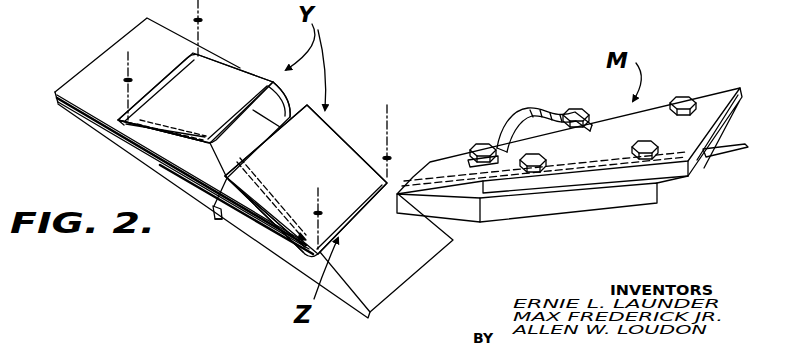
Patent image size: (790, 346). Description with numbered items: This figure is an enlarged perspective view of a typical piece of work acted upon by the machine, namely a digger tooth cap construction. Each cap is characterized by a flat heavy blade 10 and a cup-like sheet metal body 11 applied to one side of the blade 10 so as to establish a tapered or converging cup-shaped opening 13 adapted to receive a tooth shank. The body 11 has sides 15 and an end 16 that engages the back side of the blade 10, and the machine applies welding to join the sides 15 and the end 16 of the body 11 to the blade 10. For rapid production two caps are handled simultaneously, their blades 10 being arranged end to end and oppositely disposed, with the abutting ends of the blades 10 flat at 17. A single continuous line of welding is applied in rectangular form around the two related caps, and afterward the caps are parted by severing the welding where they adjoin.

The blade 10 is at (99, 99).
The body 11 is at (236, 82).
The cup-shaped opening 13 is at (212, 194).
The sides 15 is at (284, 100).
The end 16 is at (176, 90).
The flat abutting ends 17 is at (219, 219).